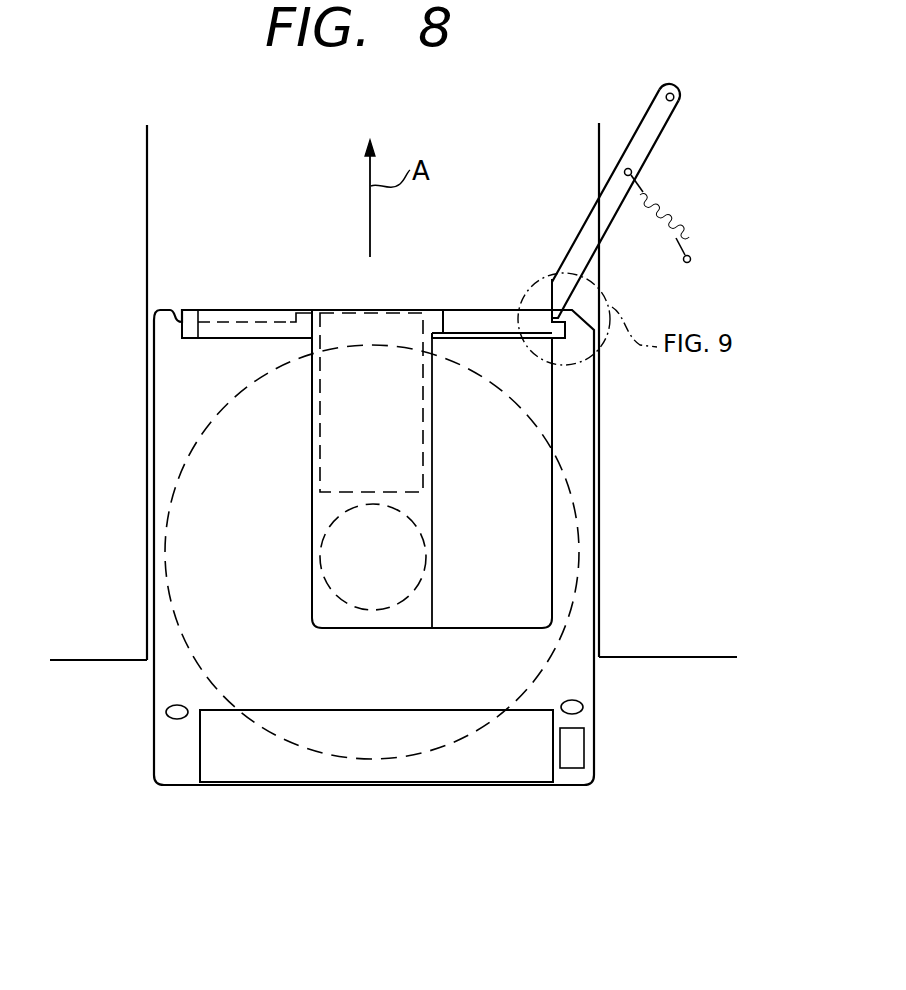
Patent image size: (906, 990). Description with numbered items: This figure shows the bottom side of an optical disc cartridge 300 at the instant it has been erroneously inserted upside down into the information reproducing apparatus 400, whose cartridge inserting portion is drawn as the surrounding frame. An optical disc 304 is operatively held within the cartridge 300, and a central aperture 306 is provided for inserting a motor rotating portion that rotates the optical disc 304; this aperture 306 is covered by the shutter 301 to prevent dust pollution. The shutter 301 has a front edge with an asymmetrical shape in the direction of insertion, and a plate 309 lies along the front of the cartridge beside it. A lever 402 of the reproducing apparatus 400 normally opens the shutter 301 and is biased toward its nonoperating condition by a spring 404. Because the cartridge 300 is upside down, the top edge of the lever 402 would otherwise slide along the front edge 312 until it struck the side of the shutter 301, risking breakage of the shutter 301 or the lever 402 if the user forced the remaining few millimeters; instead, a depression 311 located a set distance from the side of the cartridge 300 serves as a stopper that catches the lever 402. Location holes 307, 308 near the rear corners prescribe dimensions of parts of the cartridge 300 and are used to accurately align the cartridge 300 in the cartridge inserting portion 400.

The optical disc cartridge 300 is at (263, 765).
The shutter 301 is at (342, 310).
The optical disc 304 is at (455, 750).
The aperture 306 is at (372, 608).
The location hole 307 is at (166, 715).
The location hole 308 is at (584, 707).
The shutter plate 309 is at (172, 312).
The depression 311 is at (563, 334).
The front edge 312 is at (481, 310).
The information reproducing apparatus 400 is at (718, 536).
The lever 402 is at (658, 118).
The spring 404 is at (674, 222).